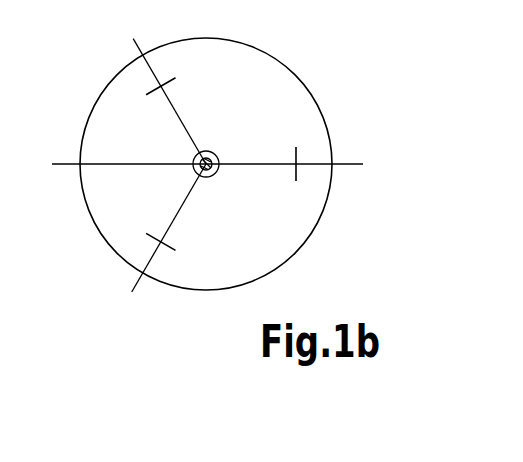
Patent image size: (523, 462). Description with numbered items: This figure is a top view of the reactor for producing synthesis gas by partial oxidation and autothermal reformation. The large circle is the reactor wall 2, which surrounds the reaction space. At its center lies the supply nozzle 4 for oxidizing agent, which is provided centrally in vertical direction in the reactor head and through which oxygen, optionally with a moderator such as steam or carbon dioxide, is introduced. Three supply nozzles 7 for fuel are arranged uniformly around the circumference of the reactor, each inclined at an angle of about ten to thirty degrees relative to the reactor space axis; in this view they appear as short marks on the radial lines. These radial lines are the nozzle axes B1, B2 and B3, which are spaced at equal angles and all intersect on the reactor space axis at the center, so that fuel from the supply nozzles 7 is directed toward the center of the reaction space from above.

The reactor wall 2 is at (273, 58).
The supply nozzle for oxidizing agent 4 is at (216, 154).
The supply nozzles for fuel 7 is at (160, 86).
The axis of supply nozzle B1 is at (221, 162).
The axis of supply nozzle B2 is at (159, 83).
The axis of supply nozzle B3 is at (158, 247).